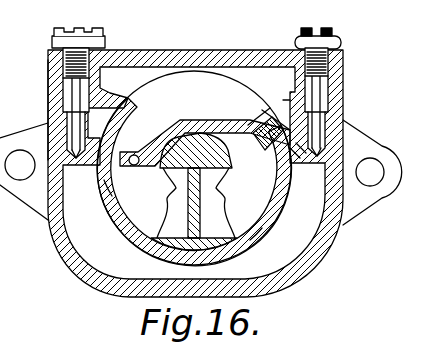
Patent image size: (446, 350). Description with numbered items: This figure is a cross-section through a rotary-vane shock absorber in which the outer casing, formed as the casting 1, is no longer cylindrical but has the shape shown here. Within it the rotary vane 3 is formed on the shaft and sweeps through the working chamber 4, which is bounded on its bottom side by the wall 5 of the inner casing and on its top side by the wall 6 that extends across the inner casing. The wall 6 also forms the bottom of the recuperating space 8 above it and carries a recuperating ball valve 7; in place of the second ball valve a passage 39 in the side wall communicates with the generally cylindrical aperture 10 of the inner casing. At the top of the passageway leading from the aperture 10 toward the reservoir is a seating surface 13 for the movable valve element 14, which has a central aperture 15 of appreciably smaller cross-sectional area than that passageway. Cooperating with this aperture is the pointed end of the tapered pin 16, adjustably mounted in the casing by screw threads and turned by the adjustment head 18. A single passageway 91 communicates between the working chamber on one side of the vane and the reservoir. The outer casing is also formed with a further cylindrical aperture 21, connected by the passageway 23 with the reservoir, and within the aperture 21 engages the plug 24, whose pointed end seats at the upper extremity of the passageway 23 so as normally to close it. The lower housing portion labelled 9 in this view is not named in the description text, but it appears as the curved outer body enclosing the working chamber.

The casting 1 is at (60, 61).
The plug 24 is at (75, 98).
The cylindrical aperture 21 is at (62, 128).
The passageway 23 is at (77, 159).
The passageway 91 is at (106, 190).
The working chamber 4 is at (124, 205).
The rotary vane 3 is at (172, 212).
The housing 9 is at (77, 260).
The recuperating ball valve 7 is at (134, 164).
The wall 6 is at (180, 123).
The recuperating space 8 is at (183, 80).
The adjustment head 18 is at (300, 42).
The passage 39 is at (263, 120).
The tapered pin 16 is at (333, 108).
The aperture 10 is at (300, 150).
The movable valve element 14 is at (341, 121).
The central aperture 15 is at (283, 152).
The seating surface 13 is at (313, 158).
The wall 5 is at (256, 232).